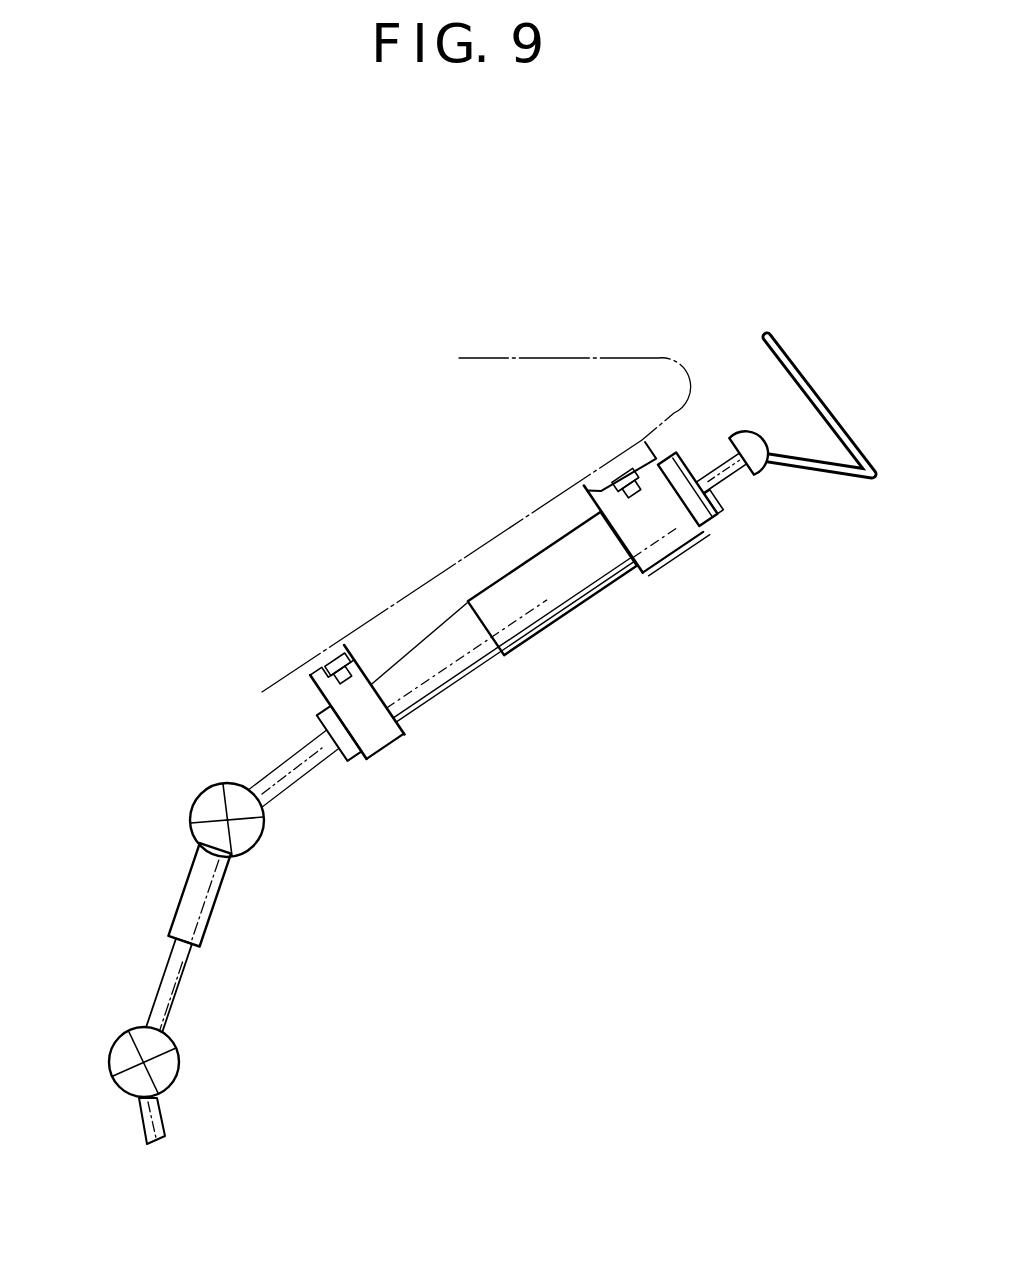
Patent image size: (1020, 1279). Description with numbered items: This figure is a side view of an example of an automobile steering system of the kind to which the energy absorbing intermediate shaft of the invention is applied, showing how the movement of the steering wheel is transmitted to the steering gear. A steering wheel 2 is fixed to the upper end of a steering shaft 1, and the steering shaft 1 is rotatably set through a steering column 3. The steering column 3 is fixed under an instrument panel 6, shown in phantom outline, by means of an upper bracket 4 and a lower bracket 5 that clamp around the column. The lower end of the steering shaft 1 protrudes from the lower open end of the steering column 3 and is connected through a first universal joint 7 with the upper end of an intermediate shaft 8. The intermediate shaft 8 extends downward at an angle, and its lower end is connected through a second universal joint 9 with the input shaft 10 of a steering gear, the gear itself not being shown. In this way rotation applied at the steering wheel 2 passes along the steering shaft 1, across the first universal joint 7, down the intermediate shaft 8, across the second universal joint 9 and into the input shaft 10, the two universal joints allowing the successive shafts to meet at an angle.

The steering shaft 1 is at (727, 476).
The steering wheel 2 is at (827, 427).
The steering column 3 is at (583, 602).
The upper bracket 4 is at (685, 548).
The lower bracket 5 is at (393, 742).
The instrument panel 6 is at (582, 371).
The first universal joint 7 is at (193, 804).
The intermediate shaft 8 is at (187, 905).
The second universal joint 9 is at (177, 1071).
The input shaft 10 is at (141, 1125).